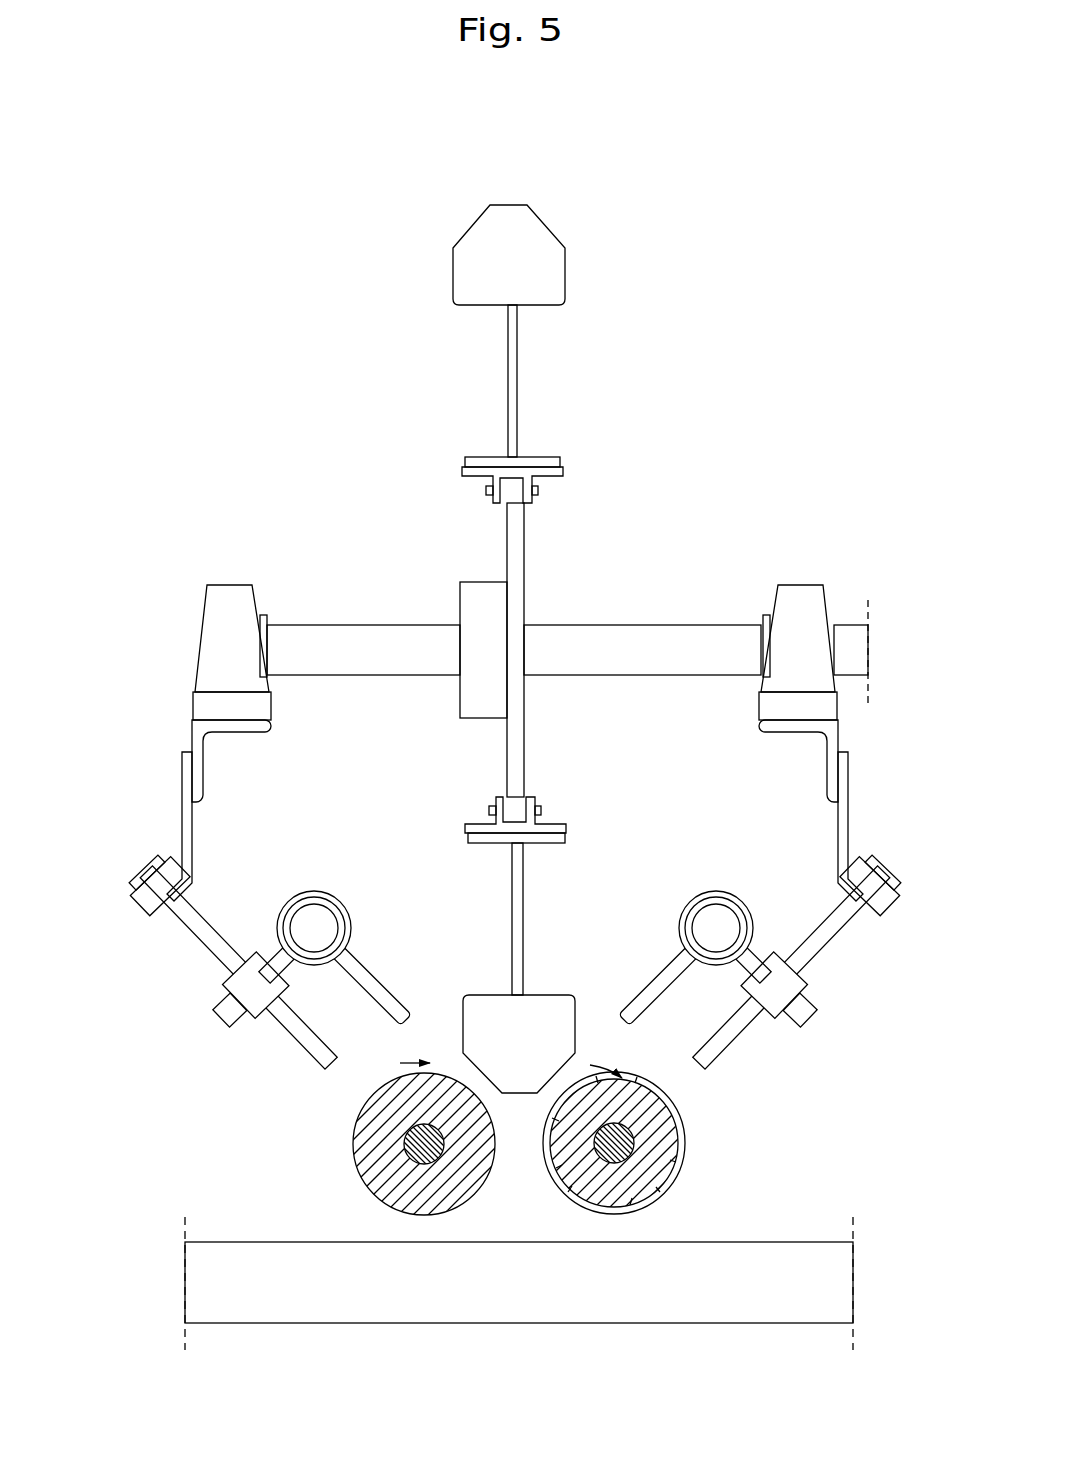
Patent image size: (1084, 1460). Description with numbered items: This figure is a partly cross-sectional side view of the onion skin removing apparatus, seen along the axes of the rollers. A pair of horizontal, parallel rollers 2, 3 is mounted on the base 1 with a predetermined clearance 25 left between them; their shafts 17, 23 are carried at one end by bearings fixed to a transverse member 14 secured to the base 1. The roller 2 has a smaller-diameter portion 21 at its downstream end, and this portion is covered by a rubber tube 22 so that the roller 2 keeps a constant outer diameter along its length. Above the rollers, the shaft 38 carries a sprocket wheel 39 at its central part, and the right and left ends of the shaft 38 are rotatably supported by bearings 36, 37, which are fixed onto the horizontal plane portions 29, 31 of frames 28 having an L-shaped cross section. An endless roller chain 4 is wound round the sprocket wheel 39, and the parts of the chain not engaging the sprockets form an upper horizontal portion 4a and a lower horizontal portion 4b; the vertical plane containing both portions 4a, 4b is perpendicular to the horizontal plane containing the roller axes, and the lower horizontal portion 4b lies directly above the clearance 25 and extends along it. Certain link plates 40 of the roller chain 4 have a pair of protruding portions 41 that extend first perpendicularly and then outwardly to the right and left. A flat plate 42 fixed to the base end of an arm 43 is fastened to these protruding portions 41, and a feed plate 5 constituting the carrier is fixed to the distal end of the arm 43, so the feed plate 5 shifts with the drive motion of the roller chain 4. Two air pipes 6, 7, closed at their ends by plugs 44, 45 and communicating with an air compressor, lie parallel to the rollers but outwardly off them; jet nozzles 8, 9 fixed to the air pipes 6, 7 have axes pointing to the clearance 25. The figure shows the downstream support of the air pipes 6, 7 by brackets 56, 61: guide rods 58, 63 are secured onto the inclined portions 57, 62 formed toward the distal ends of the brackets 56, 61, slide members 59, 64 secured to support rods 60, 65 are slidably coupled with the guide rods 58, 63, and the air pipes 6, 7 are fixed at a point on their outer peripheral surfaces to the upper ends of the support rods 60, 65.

The base 1 is at (786, 1240).
The roller 2 is at (676, 1118).
The roller 3 is at (358, 1130).
The roller chain 4 is at (490, 507).
The upper horizontal portion 4a is at (535, 503).
The lower horizontal portion 4b is at (540, 800).
The feed plate 5 is at (515, 251).
The air pipe 6 is at (700, 882).
The air pipe 7 is at (295, 890).
The jet nozzle 8 is at (678, 968).
The jet nozzle 9 is at (367, 975).
The transverse member 14 is at (400, 1293).
The shaft 17 is at (628, 1142).
The smaller-diameter portion 21 is at (678, 1173).
The rubber tube 22 is at (604, 1073).
The shaft 23 is at (415, 1147).
The clearance 25 is at (527, 1138).
The frame 28 is at (840, 732).
The horizontal plane portion 29 is at (795, 725).
The horizontal plane portion 31 is at (230, 723).
The bearing 36 is at (796, 600).
The bearing 37 is at (230, 593).
The shaft 38 is at (683, 642).
The sprocket wheel 39 is at (512, 558).
The link plate 40 is at (482, 493).
The protruding portion 41 is at (473, 472).
The flat plate 42 is at (488, 460).
The arm 43 is at (512, 372).
The plug 44 is at (735, 898).
The plug 45 is at (302, 897).
The bracket 56 is at (850, 803).
The inclined portion 57 is at (880, 878).
The guide rod 58 is at (828, 935).
The slide member 59 is at (772, 998).
The support rod 60 is at (752, 957).
The bracket 61 is at (180, 803).
The inclined portion 62 is at (150, 878).
The guide rod 63 is at (210, 948).
The slide member 64 is at (258, 1013).
The support rod 65 is at (282, 955).